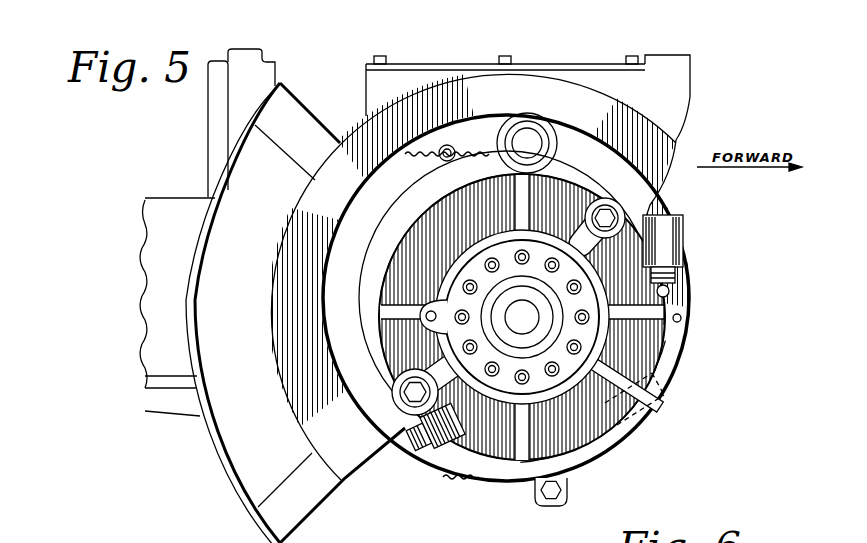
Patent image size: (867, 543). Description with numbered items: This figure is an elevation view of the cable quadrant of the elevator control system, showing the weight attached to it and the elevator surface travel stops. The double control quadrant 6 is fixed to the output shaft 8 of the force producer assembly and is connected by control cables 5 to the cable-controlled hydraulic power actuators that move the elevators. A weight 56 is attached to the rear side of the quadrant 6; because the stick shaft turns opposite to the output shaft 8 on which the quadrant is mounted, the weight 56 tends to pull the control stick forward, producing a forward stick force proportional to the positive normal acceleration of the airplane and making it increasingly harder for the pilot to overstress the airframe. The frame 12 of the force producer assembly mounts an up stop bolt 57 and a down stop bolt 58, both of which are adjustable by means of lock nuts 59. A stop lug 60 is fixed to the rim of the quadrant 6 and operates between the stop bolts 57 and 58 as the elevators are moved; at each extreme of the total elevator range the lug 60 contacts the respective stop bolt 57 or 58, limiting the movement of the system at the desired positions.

The control cables 5 is at (440, 158).
The double control quadrant 6 is at (617, 443).
The output shaft 8 is at (537, 312).
The frame 12 is at (681, 82).
The weight 56 is at (212, 433).
The up stop bolt 57 is at (443, 445).
The down stop bolt 58 is at (670, 292).
The lock nuts 59 is at (676, 273).
The stop lug 60 is at (664, 396).